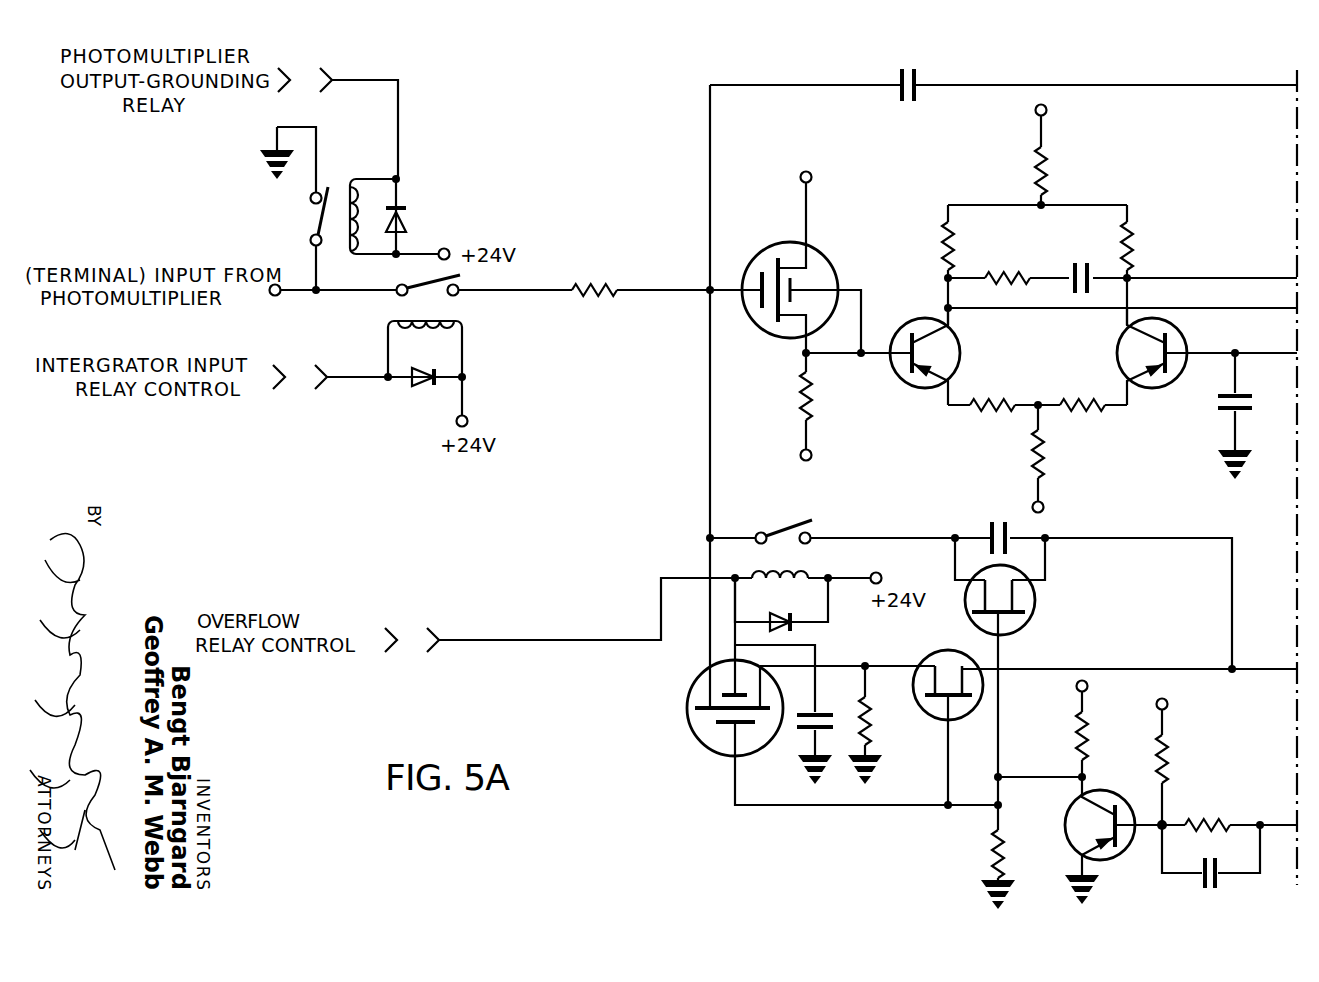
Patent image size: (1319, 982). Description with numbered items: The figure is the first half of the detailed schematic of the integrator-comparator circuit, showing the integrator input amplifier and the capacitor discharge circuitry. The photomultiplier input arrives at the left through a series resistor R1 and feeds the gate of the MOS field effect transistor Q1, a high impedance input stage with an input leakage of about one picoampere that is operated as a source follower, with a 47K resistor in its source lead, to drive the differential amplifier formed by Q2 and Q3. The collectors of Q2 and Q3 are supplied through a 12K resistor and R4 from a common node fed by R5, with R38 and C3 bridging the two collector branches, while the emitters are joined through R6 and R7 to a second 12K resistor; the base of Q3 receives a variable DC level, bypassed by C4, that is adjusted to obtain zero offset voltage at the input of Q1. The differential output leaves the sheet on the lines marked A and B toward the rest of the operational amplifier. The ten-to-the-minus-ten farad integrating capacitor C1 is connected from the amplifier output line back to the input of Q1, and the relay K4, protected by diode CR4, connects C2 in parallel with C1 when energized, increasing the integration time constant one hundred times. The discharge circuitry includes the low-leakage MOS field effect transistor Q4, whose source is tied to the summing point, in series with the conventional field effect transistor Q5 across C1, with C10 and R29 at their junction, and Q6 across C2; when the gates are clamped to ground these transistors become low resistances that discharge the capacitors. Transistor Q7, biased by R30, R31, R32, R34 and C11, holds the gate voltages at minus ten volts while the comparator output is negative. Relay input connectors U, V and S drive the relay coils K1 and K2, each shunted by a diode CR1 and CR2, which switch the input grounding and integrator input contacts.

The photomultiplier output-grounding relay connector U is at (338, 123).
The integrator input relay control connector V is at (330, 377).
The overflow relay control connector S is at (560, 615).
The relay coil K1 is at (354, 188).
The diode CR1 is at (408, 222).
The relay coil K2 is at (388, 321).
The diode CR2 is at (427, 386).
The resistor R1 is at (589, 284).
The MOS field effect transistor Q1 is at (769, 252).
The 47K resistor 47K is at (800, 400).
The integrating capacitor C1 is at (905, 110).
The bus line A is at (1297, 462).
The bus line B is at (1280, 868).
The resistor R5 is at (1034, 163).
The 12K resistors 12K is at (944, 250).
The resistor R4 is at (1135, 251).
The resistor R38 is at (1003, 272).
The capacitor C3 is at (1074, 270).
The differential amplifier transistor Q2 is at (961, 353).
The differential amplifier transistor Q3 is at (1119, 369).
The resistor R6 is at (1000, 410).
The resistor R7 is at (1074, 410).
The capacitor C4 is at (1226, 413).
The capacitor C2 is at (985, 529).
The field effect transistor Q6 is at (1036, 608).
The relay K4 is at (808, 575).
The diode CR4 is at (796, 625).
The MOS field effect transistor Q4 is at (698, 741).
The capacitor C10 is at (819, 714).
The resistor R29 is at (871, 719).
The field effect transistor Q5 is at (943, 651).
The resistor R30 is at (990, 843).
The resistor R31 is at (1076, 729).
The gate control transistor Q7 is at (1067, 830).
The resistor R32 is at (1169, 753).
The resistor R34 is at (1205, 820).
The capacitor C11 is at (1200, 887).